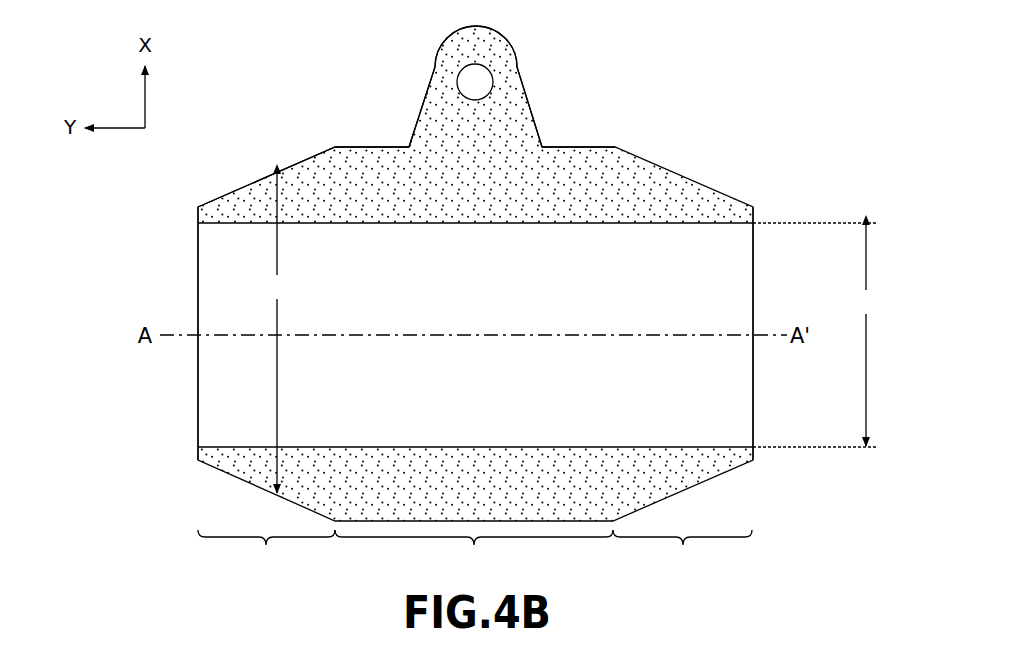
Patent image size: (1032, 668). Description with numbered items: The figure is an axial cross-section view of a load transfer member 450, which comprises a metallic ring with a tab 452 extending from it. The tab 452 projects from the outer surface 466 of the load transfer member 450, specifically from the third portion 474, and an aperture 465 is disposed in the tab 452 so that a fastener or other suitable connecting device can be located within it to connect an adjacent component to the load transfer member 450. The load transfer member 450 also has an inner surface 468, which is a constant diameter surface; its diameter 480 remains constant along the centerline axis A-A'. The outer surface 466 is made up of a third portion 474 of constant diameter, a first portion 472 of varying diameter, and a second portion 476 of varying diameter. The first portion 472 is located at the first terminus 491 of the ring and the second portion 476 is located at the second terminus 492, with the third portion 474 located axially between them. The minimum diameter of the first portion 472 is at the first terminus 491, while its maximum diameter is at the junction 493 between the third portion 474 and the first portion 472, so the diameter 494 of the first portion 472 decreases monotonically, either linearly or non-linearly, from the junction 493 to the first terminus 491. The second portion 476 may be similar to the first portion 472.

The load transfer member 450 is at (722, 113).
The tab 452 is at (512, 124).
The aperture 465 is at (462, 67).
The outer surface 466 is at (374, 146).
The inner surface 468 is at (352, 224).
The first portion 472 is at (266, 555).
The third portion 474 is at (474, 555).
The second portion 476 is at (682, 555).
The diameter 480 is at (819, 335).
The first terminus 491 is at (176, 270).
The second terminus 492 is at (762, 369).
The junction 493 is at (331, 136).
The diameter 494 is at (277, 333).